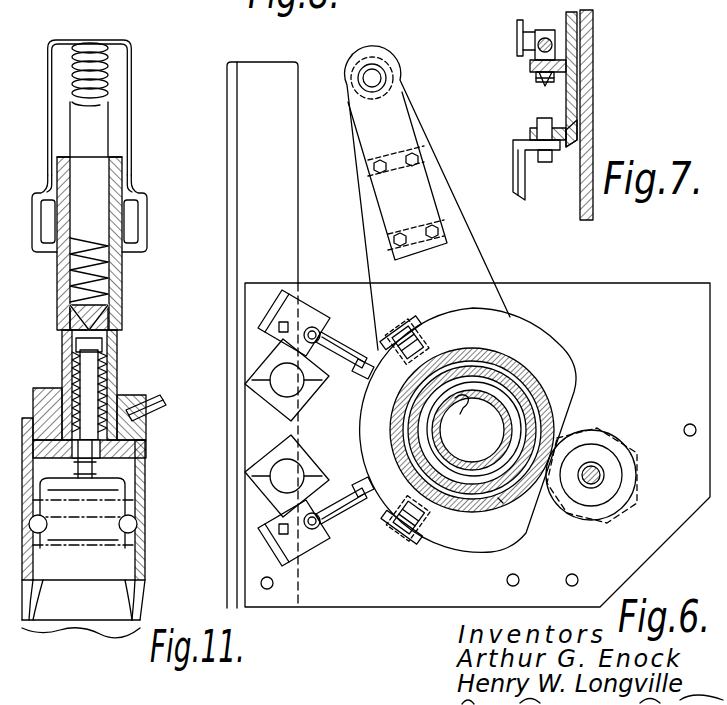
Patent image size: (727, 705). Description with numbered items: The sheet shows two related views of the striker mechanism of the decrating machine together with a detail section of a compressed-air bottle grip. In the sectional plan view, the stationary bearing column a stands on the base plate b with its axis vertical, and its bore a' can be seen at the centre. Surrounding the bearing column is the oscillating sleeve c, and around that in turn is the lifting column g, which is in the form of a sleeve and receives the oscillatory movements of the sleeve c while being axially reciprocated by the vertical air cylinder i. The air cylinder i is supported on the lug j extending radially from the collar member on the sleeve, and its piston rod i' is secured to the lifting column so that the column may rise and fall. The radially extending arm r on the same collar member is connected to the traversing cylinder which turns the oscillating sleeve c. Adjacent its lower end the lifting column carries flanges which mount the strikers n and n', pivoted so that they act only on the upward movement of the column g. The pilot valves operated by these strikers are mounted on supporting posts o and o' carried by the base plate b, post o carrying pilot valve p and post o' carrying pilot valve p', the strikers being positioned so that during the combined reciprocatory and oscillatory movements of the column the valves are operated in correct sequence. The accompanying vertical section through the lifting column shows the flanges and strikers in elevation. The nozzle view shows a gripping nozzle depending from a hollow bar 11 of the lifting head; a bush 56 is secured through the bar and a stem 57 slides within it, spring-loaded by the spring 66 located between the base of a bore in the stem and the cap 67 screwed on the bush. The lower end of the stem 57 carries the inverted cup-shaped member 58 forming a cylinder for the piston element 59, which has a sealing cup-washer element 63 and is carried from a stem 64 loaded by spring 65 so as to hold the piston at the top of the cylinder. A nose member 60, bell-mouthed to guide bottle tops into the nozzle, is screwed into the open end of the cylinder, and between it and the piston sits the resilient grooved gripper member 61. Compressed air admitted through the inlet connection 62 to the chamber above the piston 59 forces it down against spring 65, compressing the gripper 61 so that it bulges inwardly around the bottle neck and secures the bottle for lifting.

In FIG. 11, the cap 67 is at (130, 108).
In FIG. 11, the hollow bar 11 is at (146, 208).
In FIG. 11, the bush 56 is at (102, 223).
In FIG. 11, the spring 66 is at (110, 276).
In FIG. 11, the stem 57 is at (106, 321).
In FIG. 11, the stem 64 is at (90, 368).
In FIG. 11, the spring 65 is at (72, 368).
In FIG. 11, the piston element 59 is at (60, 426).
In FIG. 11, the compressed air inlet connection 62 is at (152, 412).
In FIG. 11, the sealing cup-washer element 63 is at (146, 442).
In FIG. 11, the inverted cup-shaped member 58 is at (142, 518).
In FIG. 11, the gripper member 61 is at (136, 535).
In FIG. 11, the nose member 60 is at (140, 606).
In FIG. 6, the base plate b is at (640, 297).
In FIG. 6, the arm r is at (425, 158).
In FIG. 7, the oscillating sleeve c is at (592, 90).
In FIG. 6, the oscillating sleeve c is at (535, 418).
In FIG. 6, the bearing column a is at (501, 428).
In FIG. 6, the bore a' is at (472, 430).
In FIG. 6, the supporting post o is at (257, 476).
In FIG. 6, the supporting post o' is at (253, 380).
In FIG. 6, the pilot valve p is at (316, 507).
In FIG. 6, the pilot valve p' is at (316, 312).
In FIG. 6, the striker n is at (410, 543).
In FIG. 7, the striker n' is at (503, 30).
In FIG. 6, the striker n' is at (457, 302).
In FIG. 6, the air cylinder i is at (599, 458).
In FIG. 6, the piston rod i' is at (633, 470).
In FIG. 6, the lug j is at (553, 498).
In FIG. 7, the lifting column g is at (568, 32).
In FIG. 6, the lifting column g is at (503, 503).